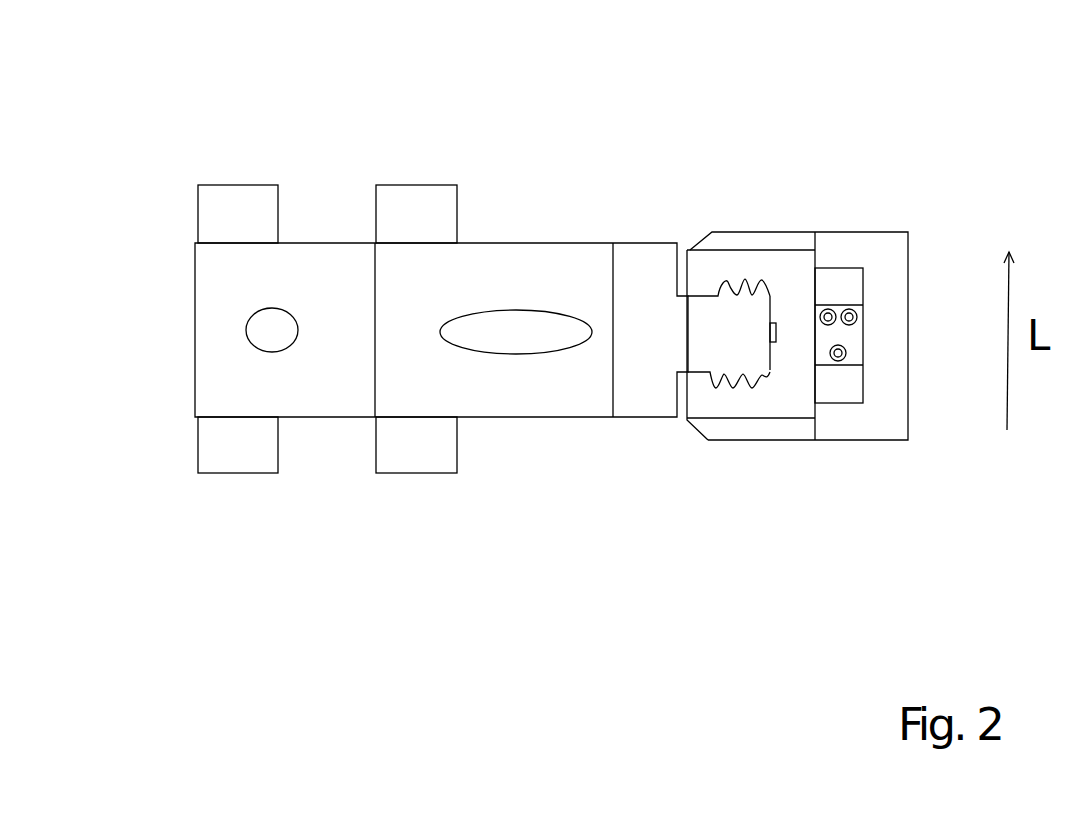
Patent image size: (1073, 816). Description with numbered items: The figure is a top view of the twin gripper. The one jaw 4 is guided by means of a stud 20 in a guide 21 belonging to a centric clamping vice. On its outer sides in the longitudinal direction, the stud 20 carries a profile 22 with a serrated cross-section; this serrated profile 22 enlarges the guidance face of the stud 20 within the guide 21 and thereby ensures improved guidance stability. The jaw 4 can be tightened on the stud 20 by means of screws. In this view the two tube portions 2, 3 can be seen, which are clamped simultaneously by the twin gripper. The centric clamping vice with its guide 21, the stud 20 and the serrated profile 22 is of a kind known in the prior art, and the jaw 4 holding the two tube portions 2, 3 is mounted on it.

The tube portion 2 is at (238, 452).
The tube portion 3 is at (418, 452).
The jaw 4 is at (535, 275).
The stud 20 is at (713, 348).
The guide 21 is at (799, 275).
The profile 22 is at (745, 279).